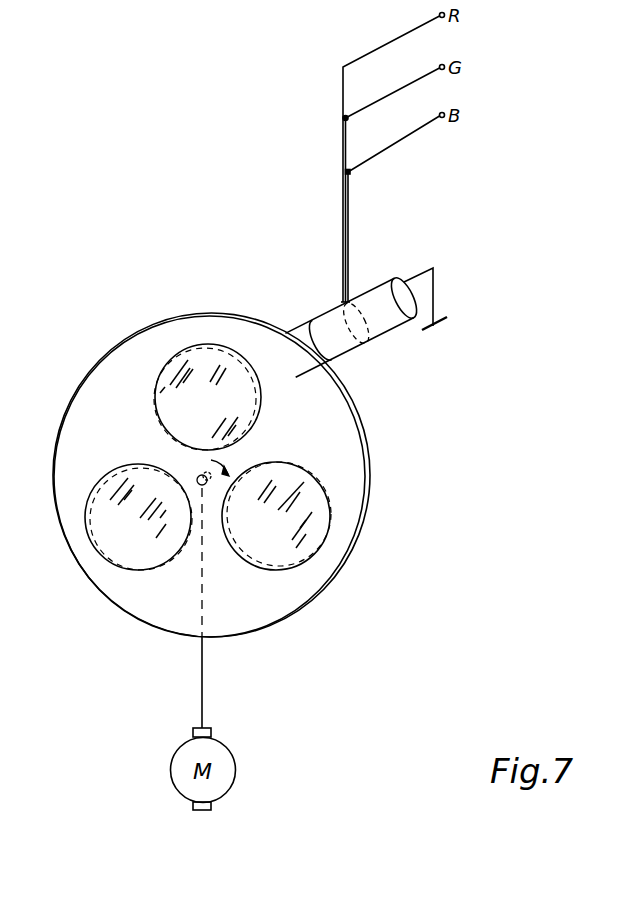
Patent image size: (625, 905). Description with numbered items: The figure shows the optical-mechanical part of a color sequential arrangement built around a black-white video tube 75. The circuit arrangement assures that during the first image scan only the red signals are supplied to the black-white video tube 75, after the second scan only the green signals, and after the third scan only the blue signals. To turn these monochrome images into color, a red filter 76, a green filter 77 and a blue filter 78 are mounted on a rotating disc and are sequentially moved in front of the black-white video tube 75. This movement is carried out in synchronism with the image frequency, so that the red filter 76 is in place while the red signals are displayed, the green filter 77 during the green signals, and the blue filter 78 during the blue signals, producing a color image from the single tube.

The black-white video tube 75 is at (350, 338).
The red filter 76 is at (187, 352).
The green filter 77 is at (115, 548).
The blue filter 78 is at (322, 508).